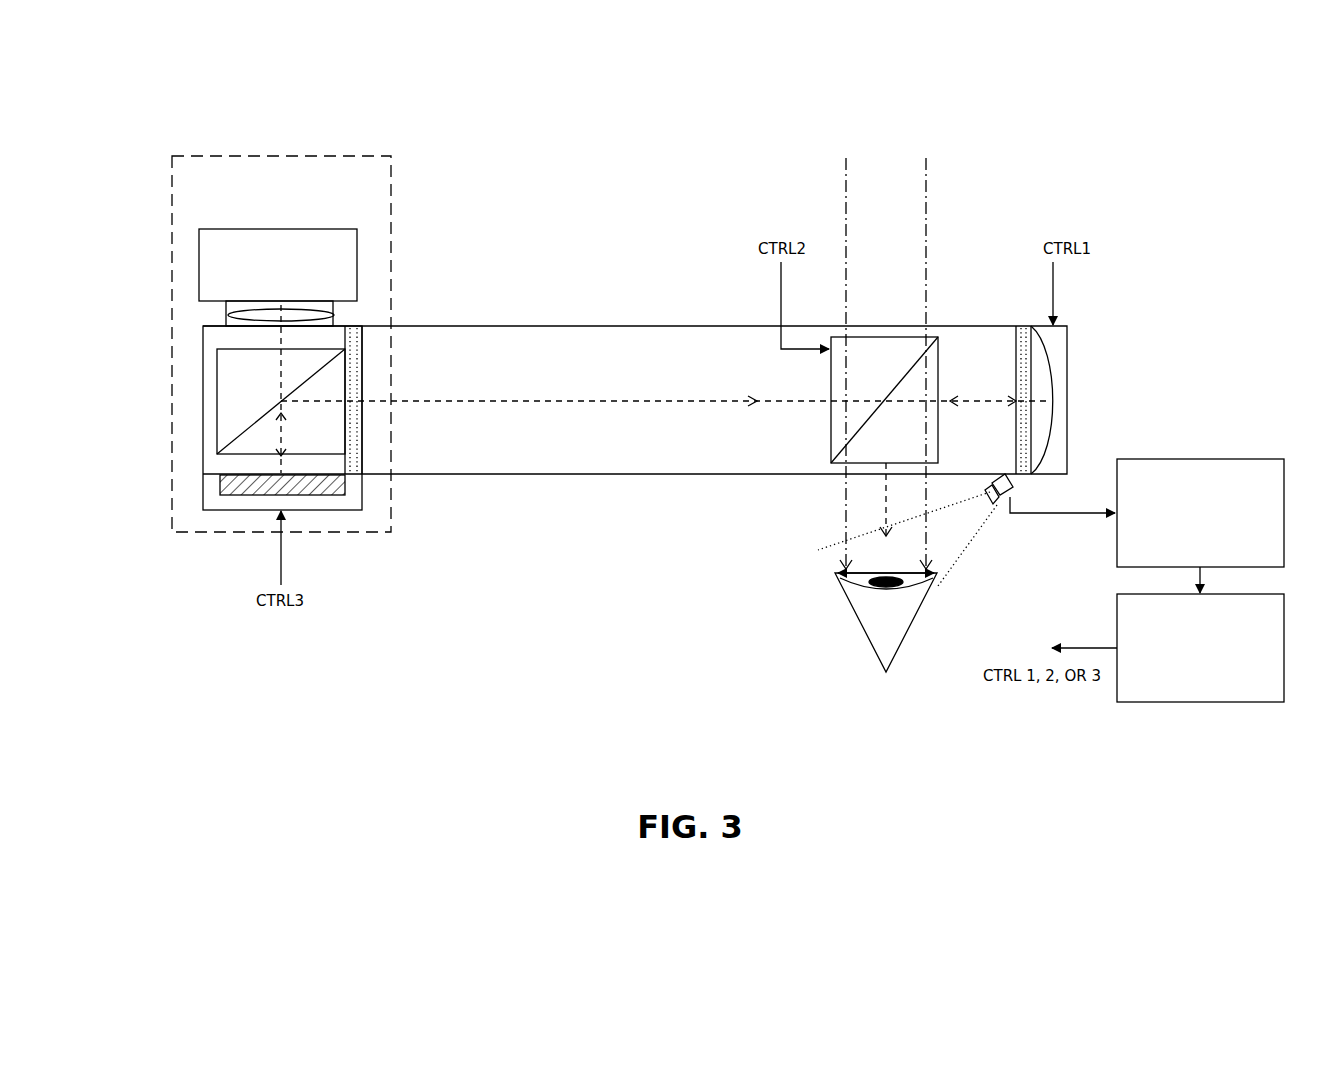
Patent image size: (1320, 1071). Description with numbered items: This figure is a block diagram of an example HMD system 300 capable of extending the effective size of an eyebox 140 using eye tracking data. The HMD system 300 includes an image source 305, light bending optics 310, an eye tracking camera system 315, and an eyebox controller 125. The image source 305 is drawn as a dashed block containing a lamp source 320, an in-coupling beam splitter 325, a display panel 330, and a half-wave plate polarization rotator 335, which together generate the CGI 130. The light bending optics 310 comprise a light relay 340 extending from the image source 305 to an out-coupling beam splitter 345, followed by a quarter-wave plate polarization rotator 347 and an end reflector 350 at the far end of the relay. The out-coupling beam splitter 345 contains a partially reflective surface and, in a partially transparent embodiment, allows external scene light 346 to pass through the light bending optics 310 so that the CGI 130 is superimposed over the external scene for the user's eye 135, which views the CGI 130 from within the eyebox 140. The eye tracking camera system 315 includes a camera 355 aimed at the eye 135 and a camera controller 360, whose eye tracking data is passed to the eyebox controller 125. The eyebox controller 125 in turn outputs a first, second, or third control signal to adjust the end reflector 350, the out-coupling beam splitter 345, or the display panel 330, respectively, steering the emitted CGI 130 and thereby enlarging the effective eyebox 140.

The HMD system 300 is at (240, 92).
The image source 305 is at (281, 344).
The light bending optics 310 is at (563, 218).
The eye tracking camera system 315 is at (1145, 395).
The lamp source 320 is at (278, 277).
The in-coupling beam splitter 325 is at (217, 365).
The display panel 330 is at (203, 495).
The half-wave plate polarization rotator 335 is at (362, 335).
The light relay 340 is at (475, 475).
The out-coupling beam splitter 345 is at (931, 332).
The external scene light 346 is at (927, 185).
The quarter-wave plate polarization rotator 347 is at (1019, 326).
The end reflector 350 is at (1067, 365).
The camera 355 is at (1008, 500).
The camera controller 360 is at (1200, 513).
The eyebox controller 125 is at (1200, 648).
The CGI 130 is at (884, 486).
The eye 135 is at (886, 622).
The eyebox 140 is at (836, 574).